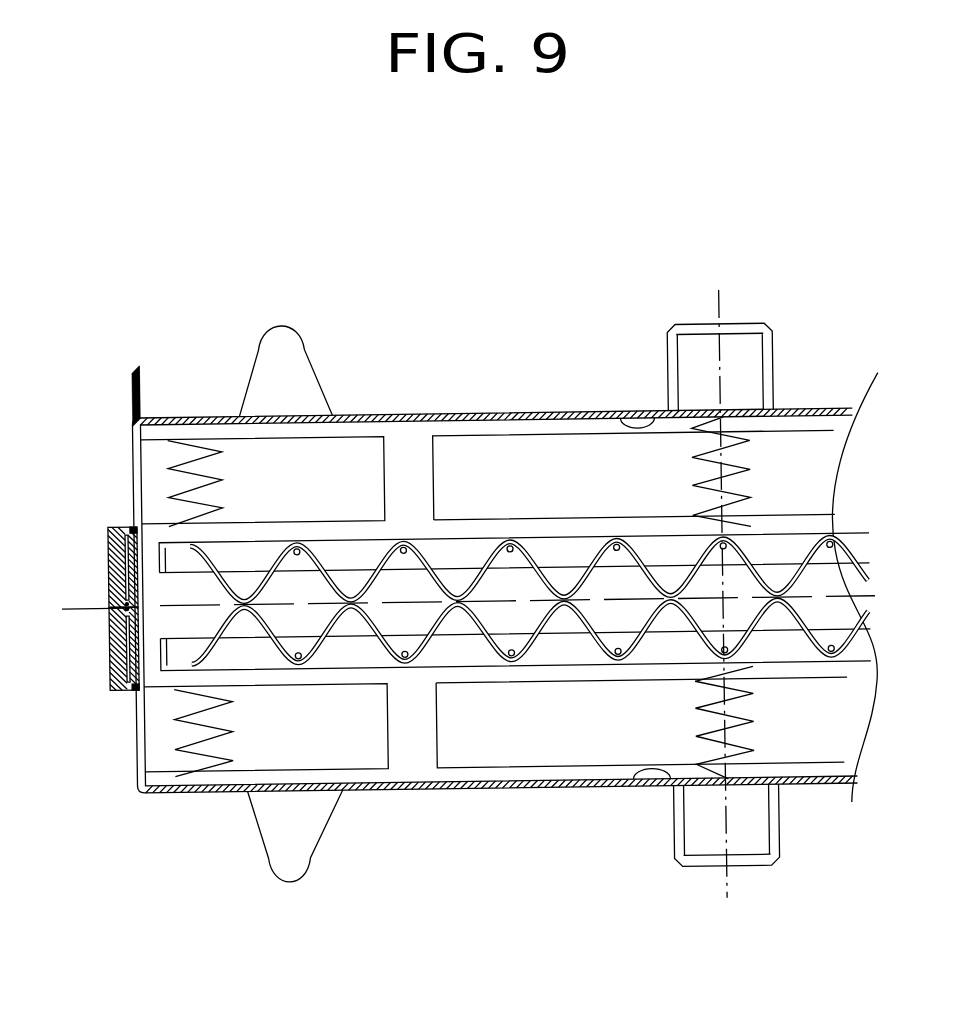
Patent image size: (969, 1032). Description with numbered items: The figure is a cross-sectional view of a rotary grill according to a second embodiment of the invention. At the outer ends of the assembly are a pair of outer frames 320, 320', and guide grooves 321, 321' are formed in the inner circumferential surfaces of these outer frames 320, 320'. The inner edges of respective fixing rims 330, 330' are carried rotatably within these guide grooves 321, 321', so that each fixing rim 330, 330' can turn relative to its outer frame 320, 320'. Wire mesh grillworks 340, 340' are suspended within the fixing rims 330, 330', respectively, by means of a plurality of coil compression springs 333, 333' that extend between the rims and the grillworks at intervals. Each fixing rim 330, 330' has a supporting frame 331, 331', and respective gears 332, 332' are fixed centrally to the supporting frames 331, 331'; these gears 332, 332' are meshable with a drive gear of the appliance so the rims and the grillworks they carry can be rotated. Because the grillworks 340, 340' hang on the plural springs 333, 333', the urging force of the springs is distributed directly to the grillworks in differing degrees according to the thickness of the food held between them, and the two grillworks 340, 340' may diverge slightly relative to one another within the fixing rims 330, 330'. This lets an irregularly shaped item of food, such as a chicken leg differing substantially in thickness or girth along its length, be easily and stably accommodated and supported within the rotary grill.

The outer frame 320 is at (87, 568).
The outer frame 320' is at (93, 648).
The guide groove 321 is at (95, 543).
The guide groove 321' is at (105, 680).
The fixing rim 330 is at (493, 481).
The fixing rim 330' is at (496, 721).
The supporting frame 331 is at (672, 449).
The supporting frame 331' is at (676, 759).
The gear 332 is at (688, 349).
The gear 332' is at (727, 855).
The coil compression spring 333 is at (195, 451).
The coil compression spring 333' is at (204, 782).
The wire mesh grillwork 340 is at (514, 536).
The wire mesh grillwork 340' is at (515, 662).